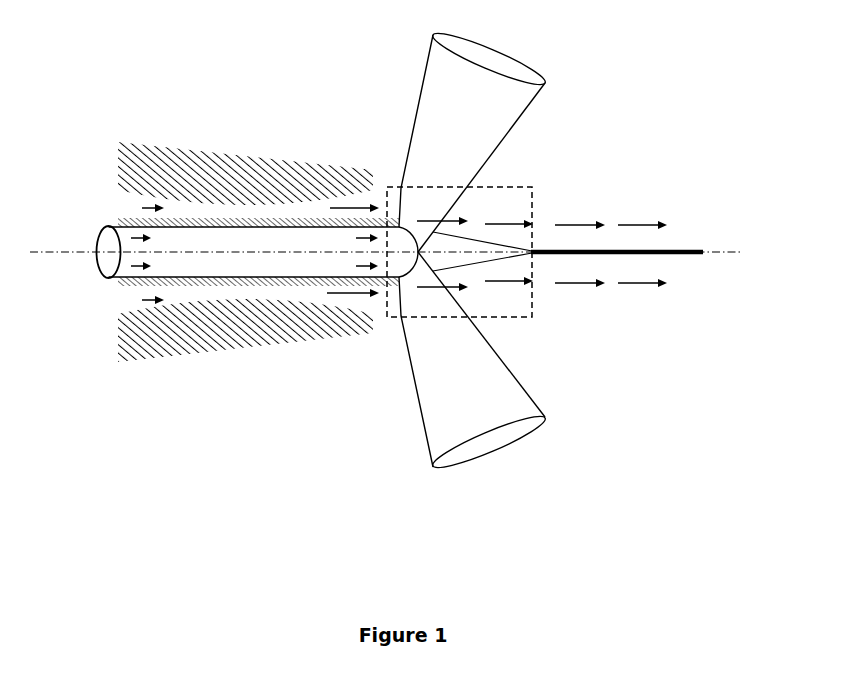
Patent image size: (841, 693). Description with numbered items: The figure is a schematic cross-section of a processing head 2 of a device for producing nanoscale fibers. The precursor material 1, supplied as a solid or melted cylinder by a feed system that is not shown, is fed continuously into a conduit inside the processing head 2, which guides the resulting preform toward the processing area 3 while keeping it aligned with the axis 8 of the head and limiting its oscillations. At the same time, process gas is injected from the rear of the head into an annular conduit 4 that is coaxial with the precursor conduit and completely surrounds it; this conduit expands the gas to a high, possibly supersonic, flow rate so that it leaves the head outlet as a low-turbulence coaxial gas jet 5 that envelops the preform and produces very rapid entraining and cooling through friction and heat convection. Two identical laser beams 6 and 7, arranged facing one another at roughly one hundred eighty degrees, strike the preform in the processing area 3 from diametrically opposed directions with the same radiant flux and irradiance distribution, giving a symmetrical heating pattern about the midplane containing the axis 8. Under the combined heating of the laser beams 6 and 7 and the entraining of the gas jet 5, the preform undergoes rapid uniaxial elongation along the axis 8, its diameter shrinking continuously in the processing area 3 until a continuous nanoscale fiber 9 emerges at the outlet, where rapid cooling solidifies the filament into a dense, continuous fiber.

The precursor material 1 is at (103, 263).
The processing head 2 is at (270, 168).
The processing area 3 is at (399, 182).
The annular conduit 4 is at (128, 208).
The coaxial gas jet 5 is at (518, 295).
The laser beam 6 is at (494, 62).
The laser beam 7 is at (503, 440).
The axis 8 is at (75, 242).
The nanoscale fiber 9 is at (668, 239).